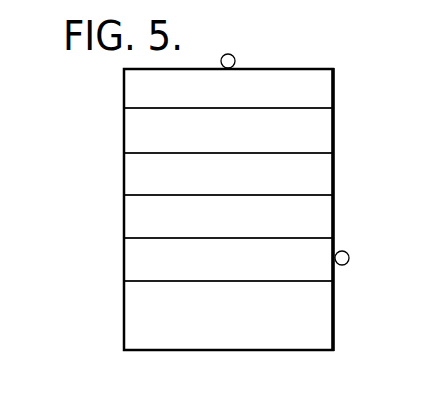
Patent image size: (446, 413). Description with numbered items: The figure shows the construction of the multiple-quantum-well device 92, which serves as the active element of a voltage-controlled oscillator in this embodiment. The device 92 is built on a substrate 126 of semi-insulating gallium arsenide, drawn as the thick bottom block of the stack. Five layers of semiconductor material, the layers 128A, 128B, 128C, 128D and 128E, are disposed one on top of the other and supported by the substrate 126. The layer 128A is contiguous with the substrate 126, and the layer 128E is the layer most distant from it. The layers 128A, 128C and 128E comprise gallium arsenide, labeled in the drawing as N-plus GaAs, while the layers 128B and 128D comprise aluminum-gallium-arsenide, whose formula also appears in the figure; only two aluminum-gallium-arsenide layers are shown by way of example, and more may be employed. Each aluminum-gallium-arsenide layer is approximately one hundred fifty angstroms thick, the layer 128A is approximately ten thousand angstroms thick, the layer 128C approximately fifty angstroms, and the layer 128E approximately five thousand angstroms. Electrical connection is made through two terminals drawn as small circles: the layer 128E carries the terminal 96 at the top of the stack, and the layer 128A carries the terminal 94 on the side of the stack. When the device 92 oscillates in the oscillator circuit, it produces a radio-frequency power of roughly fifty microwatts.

The multiple-quantum-well device 92 is at (333, 163).
The terminal 94 is at (342, 251).
The terminal 96 is at (233, 55).
The substrate 126 is at (335, 323).
The layer 128A is at (123, 266).
The layer 128B is at (335, 203).
The layer 128C is at (130, 177).
The layer 128D is at (330, 127).
The layer 128E is at (130, 85).